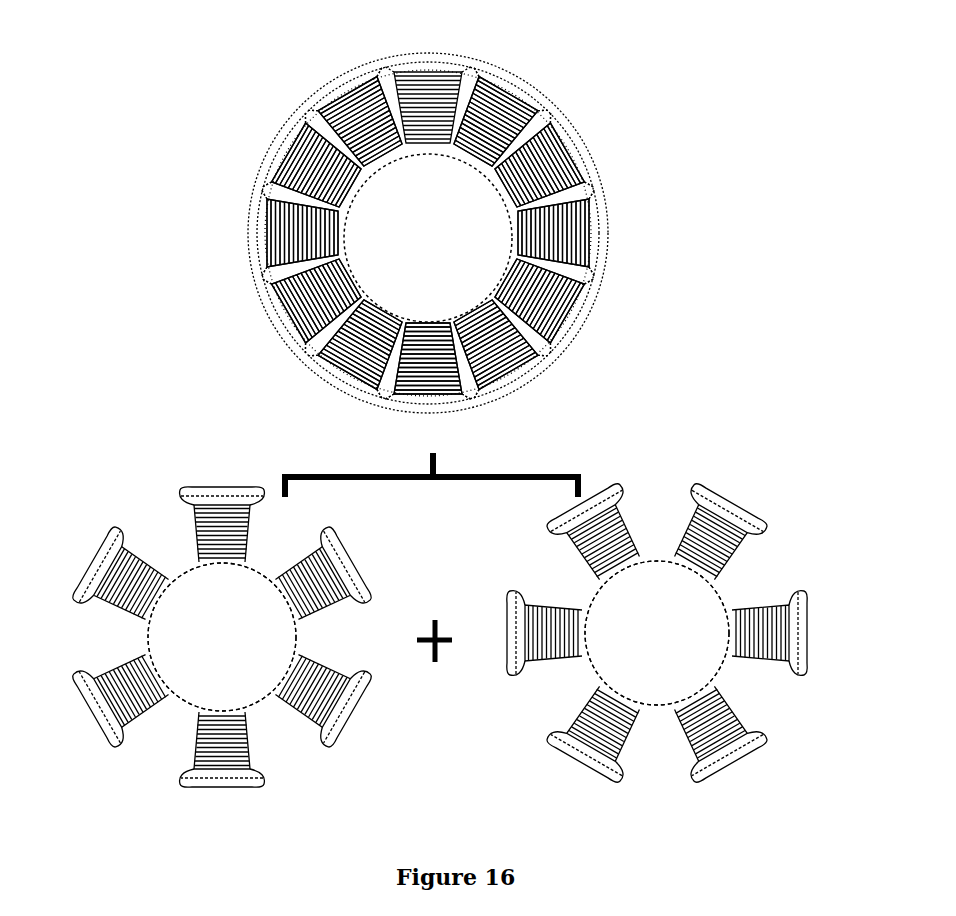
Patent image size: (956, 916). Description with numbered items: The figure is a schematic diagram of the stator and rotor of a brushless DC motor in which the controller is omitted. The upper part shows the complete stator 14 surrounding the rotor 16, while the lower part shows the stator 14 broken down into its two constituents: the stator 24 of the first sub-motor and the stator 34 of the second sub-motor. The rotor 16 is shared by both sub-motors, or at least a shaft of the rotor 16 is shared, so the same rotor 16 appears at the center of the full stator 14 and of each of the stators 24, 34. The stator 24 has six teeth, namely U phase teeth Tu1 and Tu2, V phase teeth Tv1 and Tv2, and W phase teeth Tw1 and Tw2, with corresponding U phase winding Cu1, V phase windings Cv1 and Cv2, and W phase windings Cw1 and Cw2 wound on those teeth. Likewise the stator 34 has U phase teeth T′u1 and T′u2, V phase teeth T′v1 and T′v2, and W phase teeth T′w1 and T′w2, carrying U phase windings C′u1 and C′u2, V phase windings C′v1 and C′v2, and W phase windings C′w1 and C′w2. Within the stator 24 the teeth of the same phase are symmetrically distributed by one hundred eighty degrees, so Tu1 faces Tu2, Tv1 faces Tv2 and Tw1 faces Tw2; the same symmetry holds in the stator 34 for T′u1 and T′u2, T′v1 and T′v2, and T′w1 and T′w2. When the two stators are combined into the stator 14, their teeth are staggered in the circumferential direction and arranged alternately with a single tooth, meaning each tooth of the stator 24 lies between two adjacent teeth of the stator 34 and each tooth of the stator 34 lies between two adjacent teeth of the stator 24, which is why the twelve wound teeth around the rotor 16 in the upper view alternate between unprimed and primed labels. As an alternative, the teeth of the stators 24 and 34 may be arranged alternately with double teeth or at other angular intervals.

The stator 14 is at (122, 128).
The rotor 16 is at (438, 432).
The stator of the first sub-motor 24 is at (126, 510).
The stator of the second sub-motor 34 is at (792, 548).
The U phase tooth Tu1 is at (426, 82).
The V phase tooth Tv1 is at (576, 143).
The W phase tooth Tw1 is at (584, 323).
The U phase tooth Tu2 is at (445, 401).
The V phase tooth Tv2 is at (273, 327).
The W phase tooth Tw2 is at (280, 144).
The U phase tooth T′u1 is at (602, 226).
The V phase tooth T′v1 is at (513, 386).
The W phase tooth T′w1 is at (349, 393).
The U phase tooth T′u2 is at (258, 237).
The V phase tooth T′v2 is at (352, 85).
The W phase tooth T′w2 is at (494, 90).
The U phase winding Cu1 is at (420, 403).
The V phase winding Cv1 is at (593, 168).
The W phase winding Cw1 is at (536, 328).
The V phase winding Cv2 is at (290, 301).
The W phase winding Cw2 is at (322, 160).
The U phase winding C′u1 is at (593, 253).
The V phase winding C′v1 is at (501, 393).
The W phase winding C′w1 is at (335, 363).
The U phase winding C′u2 is at (268, 222).
The V phase winding C′v2 is at (354, 104).
The W phase winding C′w2 is at (525, 99).